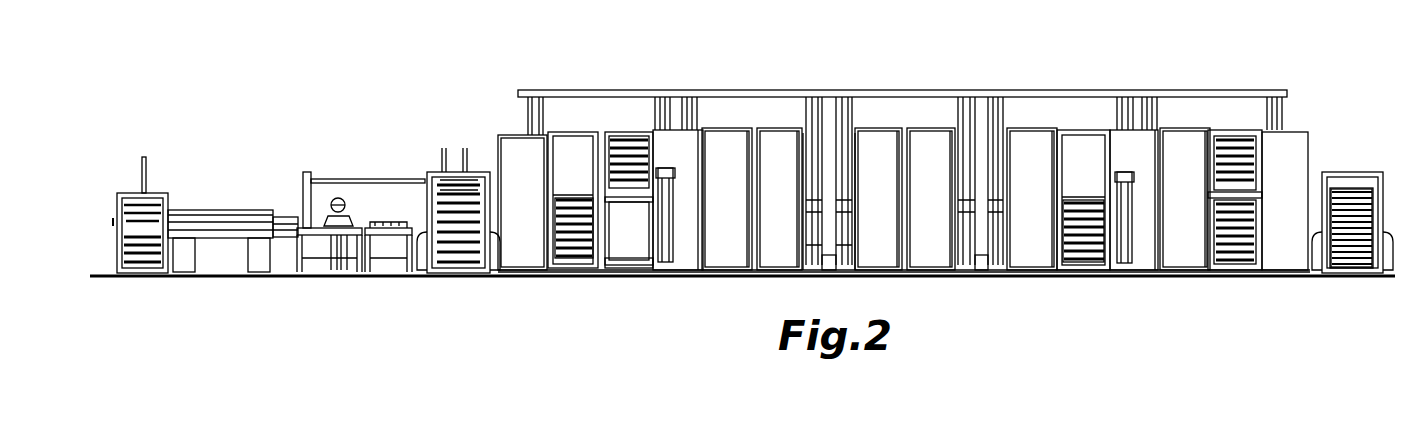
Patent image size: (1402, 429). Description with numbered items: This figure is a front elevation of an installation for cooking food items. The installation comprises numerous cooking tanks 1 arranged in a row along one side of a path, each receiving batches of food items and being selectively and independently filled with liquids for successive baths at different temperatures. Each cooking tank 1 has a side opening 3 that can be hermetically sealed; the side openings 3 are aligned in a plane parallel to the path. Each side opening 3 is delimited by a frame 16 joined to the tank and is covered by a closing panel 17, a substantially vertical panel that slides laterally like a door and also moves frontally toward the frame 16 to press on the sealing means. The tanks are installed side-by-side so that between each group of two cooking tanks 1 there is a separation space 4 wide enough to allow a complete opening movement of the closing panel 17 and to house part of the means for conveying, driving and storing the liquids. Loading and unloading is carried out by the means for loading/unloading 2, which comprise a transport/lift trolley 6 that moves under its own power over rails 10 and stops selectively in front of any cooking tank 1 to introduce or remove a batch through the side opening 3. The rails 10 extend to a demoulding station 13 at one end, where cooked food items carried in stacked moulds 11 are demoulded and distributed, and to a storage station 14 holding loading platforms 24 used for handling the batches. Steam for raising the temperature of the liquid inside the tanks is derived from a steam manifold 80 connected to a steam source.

The cooking tank 1 is at (727, 128).
The means for loading/unloading 2 is at (685, 245).
The side opening 3 is at (568, 148).
The separation space 4 is at (830, 140).
The transport/lift trolley 6 is at (632, 265).
The rails 10 is at (930, 277).
The stacked moulds 11 is at (575, 255).
The demoulding station 13 is at (300, 137).
The storage station 14 is at (423, 160).
The frame 16 is at (583, 130).
The closing panel 17 is at (507, 135).
The loading platform 24 is at (1352, 195).
The steam manifold 80 is at (920, 90).